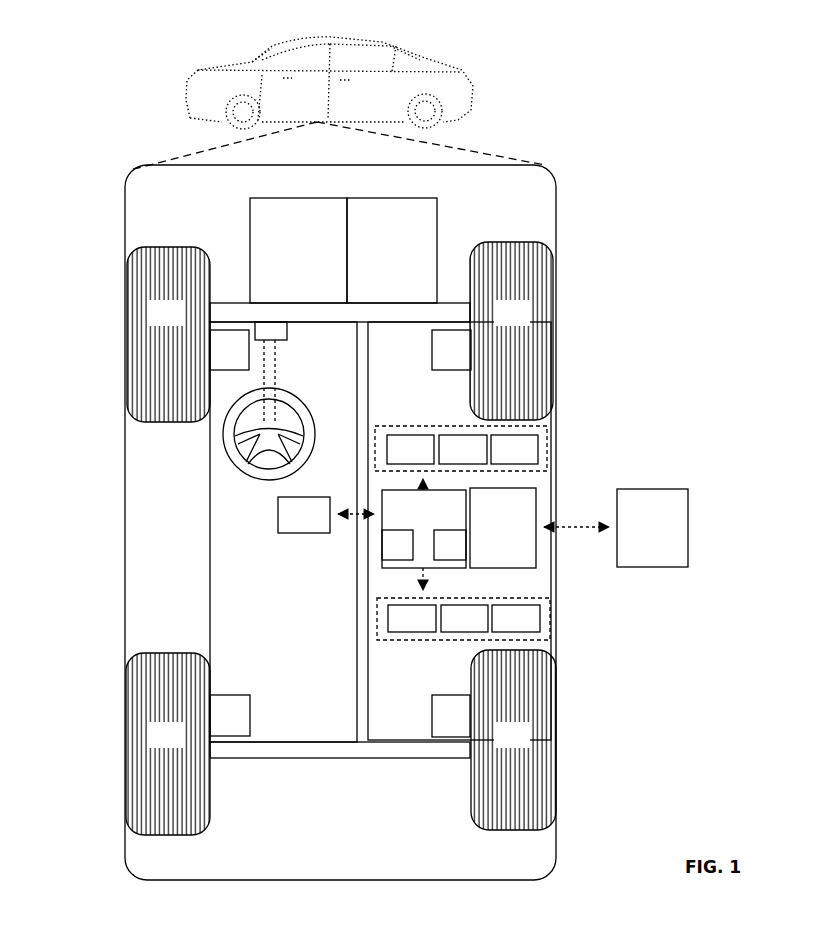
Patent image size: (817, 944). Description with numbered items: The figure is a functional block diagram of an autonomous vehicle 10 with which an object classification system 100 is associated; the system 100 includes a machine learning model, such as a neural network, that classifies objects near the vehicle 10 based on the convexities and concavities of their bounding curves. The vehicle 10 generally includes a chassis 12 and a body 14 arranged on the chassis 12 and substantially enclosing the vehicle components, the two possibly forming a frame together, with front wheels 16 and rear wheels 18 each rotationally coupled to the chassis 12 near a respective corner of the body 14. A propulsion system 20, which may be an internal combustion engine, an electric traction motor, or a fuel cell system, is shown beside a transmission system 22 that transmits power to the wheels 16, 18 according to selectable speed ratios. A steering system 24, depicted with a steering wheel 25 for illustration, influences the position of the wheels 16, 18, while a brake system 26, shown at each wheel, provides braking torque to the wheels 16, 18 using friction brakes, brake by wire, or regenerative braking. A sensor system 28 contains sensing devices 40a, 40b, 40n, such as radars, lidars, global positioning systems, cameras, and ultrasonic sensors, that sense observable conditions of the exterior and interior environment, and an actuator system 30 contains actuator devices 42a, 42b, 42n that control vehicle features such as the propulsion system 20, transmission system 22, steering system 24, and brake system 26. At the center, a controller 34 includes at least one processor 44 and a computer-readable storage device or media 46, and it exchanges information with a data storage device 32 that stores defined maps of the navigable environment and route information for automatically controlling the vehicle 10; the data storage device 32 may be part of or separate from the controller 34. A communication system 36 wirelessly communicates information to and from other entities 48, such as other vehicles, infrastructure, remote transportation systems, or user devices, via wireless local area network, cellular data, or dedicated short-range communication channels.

The autonomous vehicle 10 is at (188, 80).
The chassis 12 is at (365, 760).
The body 14 is at (125, 496).
The front wheels 16 is at (177, 324).
The rear wheels 18 is at (177, 746).
The propulsion system 20 is at (310, 262).
The transmission system 22 is at (402, 262).
The steering system 24 is at (248, 488).
The steering wheel 25 is at (301, 397).
The brake system 26 is at (240, 359).
The sensor system 28 is at (418, 426).
The actuator system 30 is at (403, 641).
The data storage device 32 is at (315, 523).
The controller 34 is at (435, 525).
The communication system 36 is at (514, 536).
The sensing device 40a is at (427, 459).
The sensing device 40b is at (480, 459).
The sensing device 40n is at (531, 459).
The actuator device 42a is at (428, 629).
The actuator device 42b is at (481, 629).
The actuator device 42n is at (532, 629).
The processor 44 is at (407, 553).
The computer-readable storage device or media 46 is at (459, 553).
The other entities 48 is at (664, 536).
The object classification system 100 is at (584, 368).